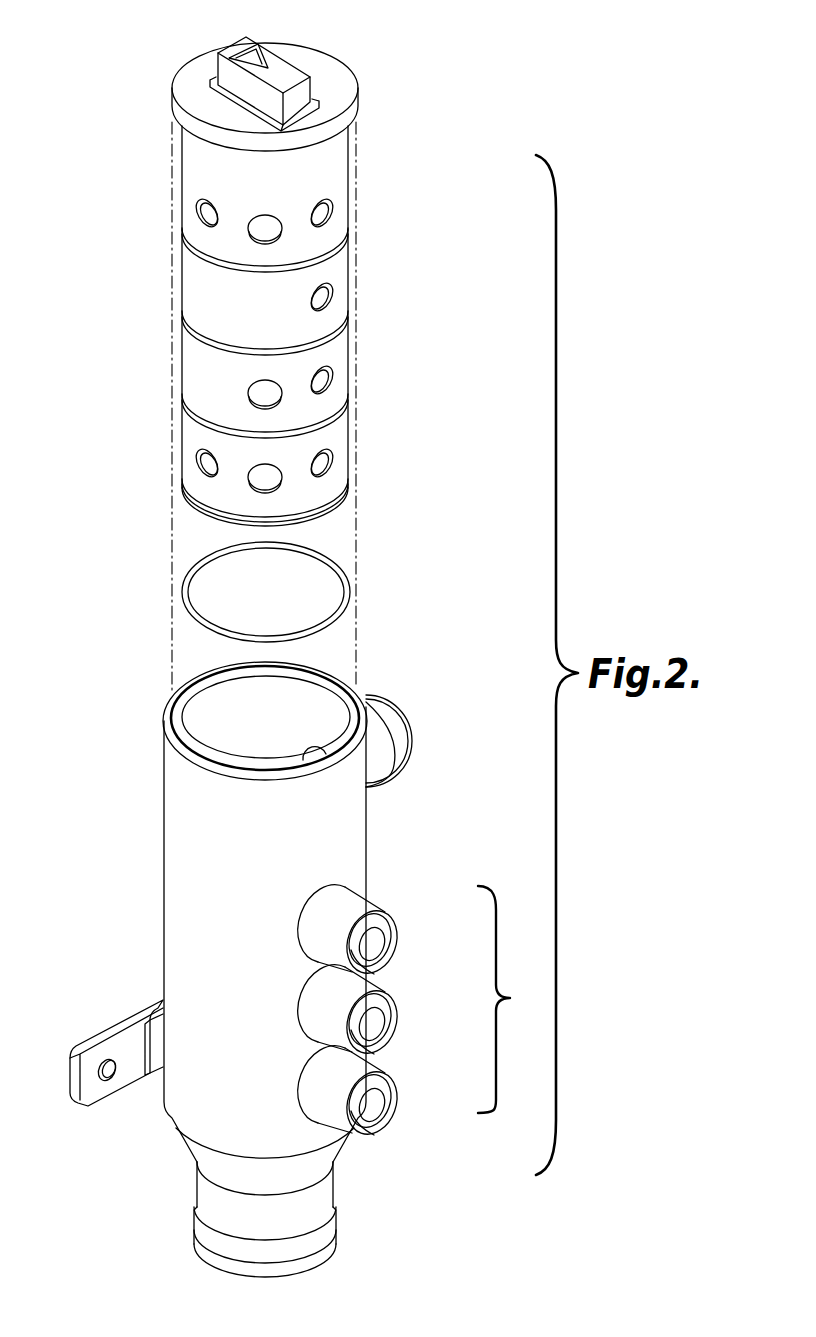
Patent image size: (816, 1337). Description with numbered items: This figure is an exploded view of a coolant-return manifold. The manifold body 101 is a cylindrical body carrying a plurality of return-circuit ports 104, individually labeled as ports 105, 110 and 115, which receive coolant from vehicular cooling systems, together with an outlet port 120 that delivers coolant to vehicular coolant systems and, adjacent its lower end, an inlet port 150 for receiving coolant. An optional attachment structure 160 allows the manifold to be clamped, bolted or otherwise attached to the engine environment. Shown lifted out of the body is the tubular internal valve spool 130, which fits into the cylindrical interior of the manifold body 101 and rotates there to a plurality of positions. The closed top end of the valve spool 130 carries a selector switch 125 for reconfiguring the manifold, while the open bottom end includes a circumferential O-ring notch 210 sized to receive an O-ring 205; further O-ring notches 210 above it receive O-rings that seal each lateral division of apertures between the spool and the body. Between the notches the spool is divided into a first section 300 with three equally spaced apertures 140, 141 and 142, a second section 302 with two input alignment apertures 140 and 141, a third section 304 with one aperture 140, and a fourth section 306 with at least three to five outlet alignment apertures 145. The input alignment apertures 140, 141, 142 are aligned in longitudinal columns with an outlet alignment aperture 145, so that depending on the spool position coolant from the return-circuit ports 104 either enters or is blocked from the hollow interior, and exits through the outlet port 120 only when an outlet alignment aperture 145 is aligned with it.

The manifold body 101 is at (185, 815).
The return-circuit ports 104 is at (512, 999).
The return-circuit port 105 is at (386, 928).
The return-circuit port 110 is at (386, 1008).
The return-circuit port 115 is at (386, 1090).
The outlet port 120 is at (392, 716).
The selector switch 125 is at (300, 68).
The tubular internal valve spool 130 is at (190, 275).
The input alignment aperture 140 is at (337, 292).
The input alignment aperture 141 is at (256, 389).
The input alignment aperture 142 is at (202, 458).
The outlet alignment apertures 145 is at (203, 206).
The inlet port 150 is at (305, 1263).
The attachment structure 160 is at (110, 1026).
The O-ring 205 is at (186, 598).
The O-ring notch 210 is at (186, 242).
The first section 300 is at (342, 433).
The second section 302 is at (342, 355).
The third section 304 is at (340, 259).
The fourth section 306 is at (333, 157).